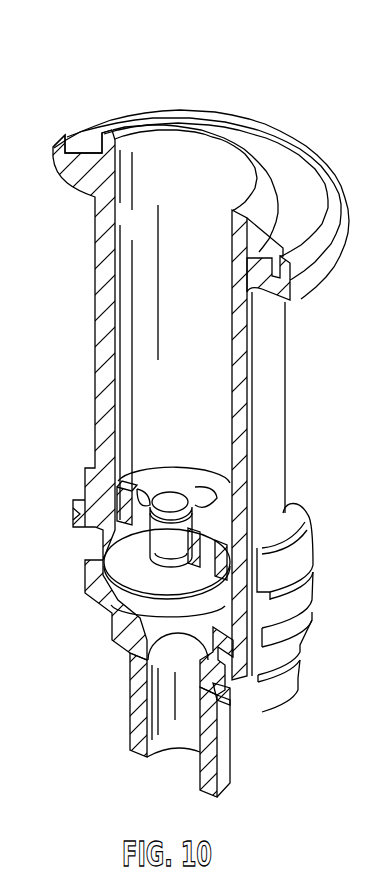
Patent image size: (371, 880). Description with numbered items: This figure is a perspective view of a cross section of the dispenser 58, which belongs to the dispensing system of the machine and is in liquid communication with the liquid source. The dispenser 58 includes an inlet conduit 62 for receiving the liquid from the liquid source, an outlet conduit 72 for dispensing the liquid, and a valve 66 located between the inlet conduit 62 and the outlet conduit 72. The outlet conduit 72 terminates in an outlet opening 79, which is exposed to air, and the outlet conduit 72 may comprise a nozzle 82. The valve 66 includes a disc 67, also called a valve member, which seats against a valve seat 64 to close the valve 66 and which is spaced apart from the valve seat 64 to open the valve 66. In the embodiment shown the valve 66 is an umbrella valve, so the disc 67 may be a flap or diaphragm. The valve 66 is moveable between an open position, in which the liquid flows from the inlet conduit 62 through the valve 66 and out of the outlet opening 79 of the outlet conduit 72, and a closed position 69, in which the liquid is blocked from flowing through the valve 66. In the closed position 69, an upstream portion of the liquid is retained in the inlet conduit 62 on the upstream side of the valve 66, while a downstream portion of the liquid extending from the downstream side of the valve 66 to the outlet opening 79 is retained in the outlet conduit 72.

The dispenser 58 is at (193, 427).
The inlet conduit 62 is at (261, 398).
The valve seat 64 is at (118, 508).
The valve 66 is at (133, 553).
The disc 67 is at (177, 580).
The closed position 69 is at (147, 577).
The outlet conduit 72 is at (216, 688).
The outlet opening 79 is at (170, 758).
The nozzle 82 is at (130, 686).